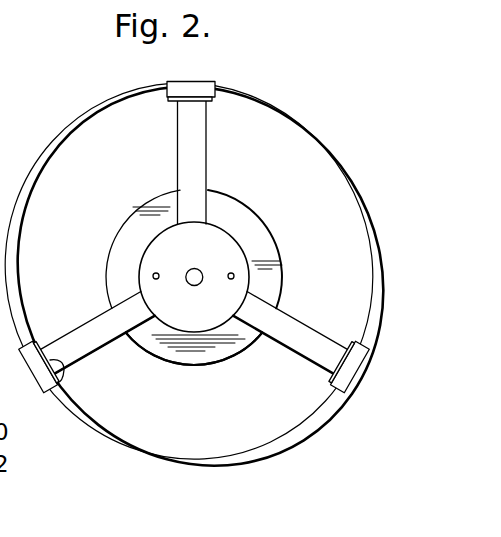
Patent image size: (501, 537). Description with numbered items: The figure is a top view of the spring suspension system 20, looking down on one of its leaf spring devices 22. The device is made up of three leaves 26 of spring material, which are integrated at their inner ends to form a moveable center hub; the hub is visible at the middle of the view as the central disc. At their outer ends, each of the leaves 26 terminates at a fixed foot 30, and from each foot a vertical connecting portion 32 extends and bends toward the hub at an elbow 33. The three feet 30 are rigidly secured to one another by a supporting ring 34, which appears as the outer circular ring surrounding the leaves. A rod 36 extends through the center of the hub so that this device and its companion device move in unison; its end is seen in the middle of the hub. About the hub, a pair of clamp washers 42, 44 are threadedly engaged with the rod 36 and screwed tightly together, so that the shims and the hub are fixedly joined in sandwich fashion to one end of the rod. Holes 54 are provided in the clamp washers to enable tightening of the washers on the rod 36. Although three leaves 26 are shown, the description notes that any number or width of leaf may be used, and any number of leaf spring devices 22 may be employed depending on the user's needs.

The spring suspension system 20 is at (62, 124).
The leaf spring device 22 is at (108, 362).
The leaves 26 is at (207, 158).
The foot 30 is at (213, 85).
The vertical connecting portion 32 is at (214, 100).
The elbow 33 is at (64, 390).
The supporting ring 34 is at (330, 147).
The rod 36 is at (188, 277).
The clamp washer 42 is at (147, 252).
The clamp washer 44 is at (202, 362).
The holes 54 is at (152, 276).